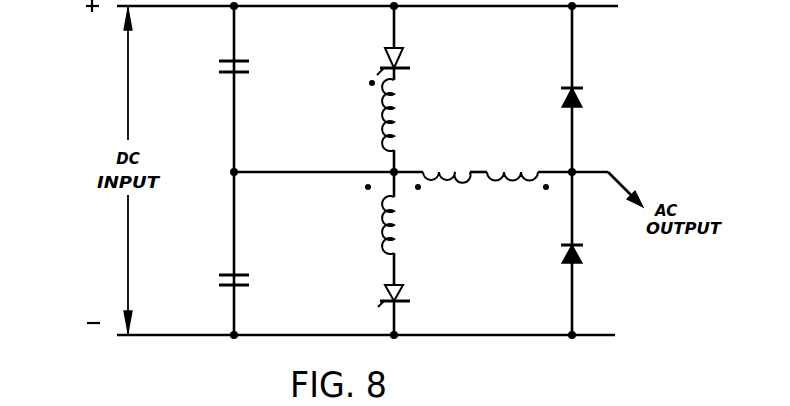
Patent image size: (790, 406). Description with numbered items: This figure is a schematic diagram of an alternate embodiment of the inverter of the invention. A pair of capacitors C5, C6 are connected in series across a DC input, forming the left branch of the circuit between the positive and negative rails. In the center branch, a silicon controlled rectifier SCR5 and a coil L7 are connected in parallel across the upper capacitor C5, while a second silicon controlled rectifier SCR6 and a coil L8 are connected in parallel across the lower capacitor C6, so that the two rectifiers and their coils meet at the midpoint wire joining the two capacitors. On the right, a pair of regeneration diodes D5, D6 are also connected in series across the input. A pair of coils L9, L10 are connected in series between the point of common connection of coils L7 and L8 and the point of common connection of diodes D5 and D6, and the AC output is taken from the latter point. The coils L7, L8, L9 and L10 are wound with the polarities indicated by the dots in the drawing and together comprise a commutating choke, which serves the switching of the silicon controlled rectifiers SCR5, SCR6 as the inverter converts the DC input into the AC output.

The capacitor C5 is at (222, 65).
The capacitor C6 is at (222, 275).
The silicon controlled rectifier SCR5 is at (405, 52).
The silicon controlled rectifier SCR6 is at (405, 292).
The coil L7 is at (397, 118).
The coil L8 is at (397, 239).
The coil L9 is at (435, 171).
The coil L10 is at (505, 171).
The regeneration diode D5 is at (580, 99).
The regeneration diode D6 is at (582, 258).